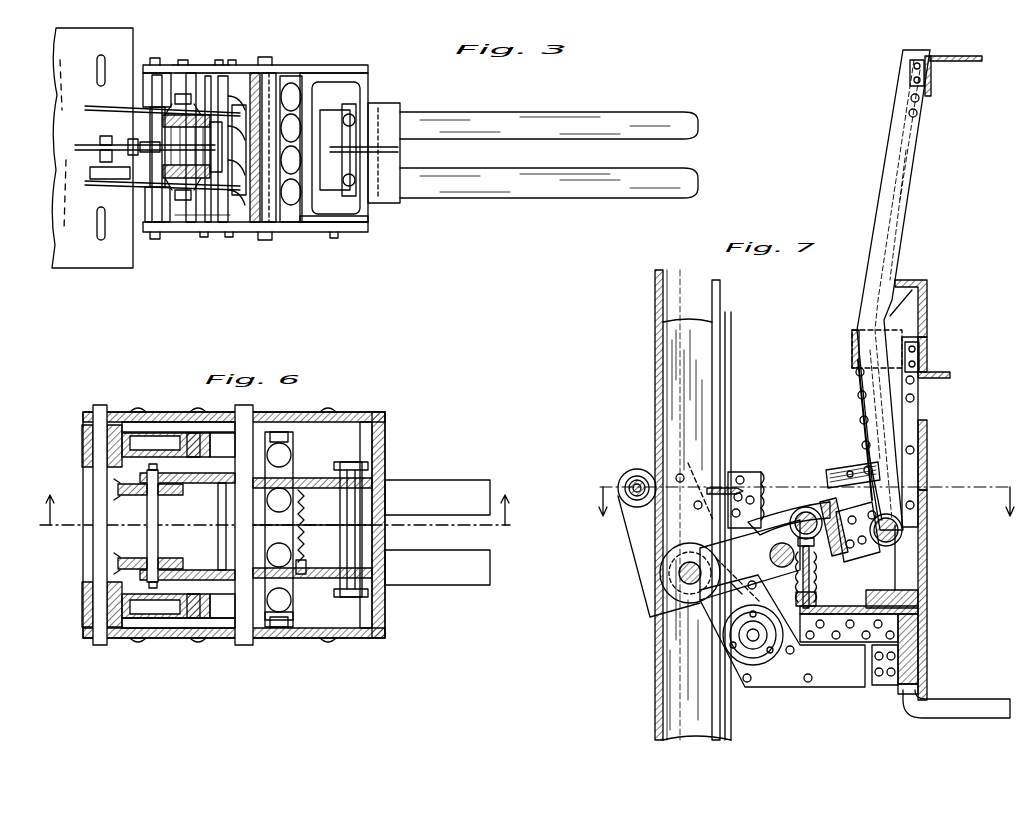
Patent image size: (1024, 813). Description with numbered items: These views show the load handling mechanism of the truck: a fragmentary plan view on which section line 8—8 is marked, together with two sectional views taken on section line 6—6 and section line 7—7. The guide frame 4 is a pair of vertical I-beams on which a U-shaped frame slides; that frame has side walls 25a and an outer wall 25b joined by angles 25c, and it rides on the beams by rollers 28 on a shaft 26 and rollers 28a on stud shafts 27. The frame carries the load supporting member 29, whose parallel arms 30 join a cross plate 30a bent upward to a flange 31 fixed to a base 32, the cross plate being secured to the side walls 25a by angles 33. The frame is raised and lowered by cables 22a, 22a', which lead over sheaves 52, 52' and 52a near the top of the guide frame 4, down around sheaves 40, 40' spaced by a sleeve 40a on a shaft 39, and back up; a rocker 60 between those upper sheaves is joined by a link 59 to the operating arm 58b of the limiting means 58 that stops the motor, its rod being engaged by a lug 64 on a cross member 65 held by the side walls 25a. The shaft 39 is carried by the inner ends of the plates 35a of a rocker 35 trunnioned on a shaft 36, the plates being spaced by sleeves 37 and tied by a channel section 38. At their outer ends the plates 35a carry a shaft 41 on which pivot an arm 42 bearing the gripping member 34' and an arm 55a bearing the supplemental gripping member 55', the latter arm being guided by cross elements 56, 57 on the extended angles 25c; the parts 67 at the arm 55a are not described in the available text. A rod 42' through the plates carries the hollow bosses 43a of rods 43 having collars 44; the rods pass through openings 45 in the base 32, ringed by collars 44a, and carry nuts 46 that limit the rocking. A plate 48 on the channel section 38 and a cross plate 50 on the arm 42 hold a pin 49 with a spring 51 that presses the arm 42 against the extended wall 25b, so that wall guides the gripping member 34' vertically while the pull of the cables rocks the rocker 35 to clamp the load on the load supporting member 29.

In FIG. 3, the guide frame 4 is at (222, 76).
In FIG. 6, the guide frame 4 is at (178, 525).
In FIG. 7, the guide frame 4 is at (732, 326).
In FIG. 7, the section line 6 is at (802, 501).
In FIG. 6, the section line 7 is at (275, 515).
In FIG. 3, the section line 8 is at (58, 248).
In FIG. 3, the flexible member 22a is at (155, 150).
In FIG. 7, the flexible member 22a' is at (686, 505).
In FIG. 3, the side walls 25a is at (316, 84).
In FIG. 6, the side walls 25a is at (308, 414).
In FIG. 7, the side walls 25a is at (826, 474).
In FIG. 3, the outer wall 25b is at (368, 218).
In FIG. 6, the outer wall 25b is at (386, 455).
In FIG. 7, the outer wall 25b is at (928, 455).
In FIG. 6, the angles 25c is at (386, 418).
In FIG. 7, the angles 25c is at (908, 560).
In FIG. 3, the shaft 26 is at (156, 232).
In FIG. 6, the shaft 26 is at (93, 562).
In FIG. 7, the shaft 26 is at (634, 480).
In FIG. 7, the stud shafts 27 is at (730, 642).
In FIG. 3, the rollers 28 is at (143, 84).
In FIG. 6, the rollers 28 is at (82, 450).
In FIG. 7, the rollers 28 is at (640, 469).
In FIG. 6, the rollers 28a is at (218, 422).
In FIG. 7, the rollers 28a is at (740, 660).
In FIG. 3, the load supporting member 29 is at (436, 139).
In FIG. 7, the load supporting member 29 is at (922, 677).
In FIG. 3, the arms 30 is at (514, 172).
In FIG. 6, the arms 30 is at (446, 480).
In FIG. 7, the arms 30 is at (955, 705).
In FIG. 7, the cross plate 30a is at (918, 645).
In FIG. 7, the flange 31 is at (918, 596).
In FIG. 7, the base 32 is at (918, 612).
In FIG. 7, the angles 33 is at (880, 686).
In FIG. 7, the gripping member 34' is at (948, 366).
In FIG. 6, the rocker 35 is at (208, 483).
In FIG. 7, the rocker 35 is at (786, 514).
In FIG. 7, the plates 35a is at (694, 498).
In FIG. 3, the shaft 36 is at (256, 73).
In FIG. 6, the shaft 36 is at (246, 645).
In FIG. 7, the shaft 36 is at (800, 582).
In FIG. 3, the sleeves 37 is at (270, 73).
In FIG. 6, the sleeves 37 is at (224, 520).
In FIG. 7, the sleeves 37 is at (770, 555).
In FIG. 6, the channel section 38 is at (310, 553).
In FIG. 7, the channel section 38 is at (856, 562).
In FIG. 6, the shaft 39 is at (158, 541).
In FIG. 7, the shaft 39 is at (664, 588).
In FIG. 6, the sheave 40 is at (155, 526).
In FIG. 7, the sleeve 40a is at (660, 576).
In FIG. 6, the sheave 40' is at (173, 526).
In FIG. 7, the sheave 40' is at (658, 595).
In FIG. 6, the shaft 41 is at (372, 526).
In FIG. 7, the shaft 41 is at (900, 524).
In FIG. 3, the arm 42 is at (364, 152).
In FIG. 6, the arm 42 is at (334, 524).
In FIG. 7, the arm 42 is at (929, 432).
In FIG. 6, the rod 42' is at (290, 623).
In FIG. 7, the rod 42' is at (800, 497).
In FIG. 7, the rods 43 is at (820, 588).
In FIG. 3, the hollow bosses 43a is at (298, 222).
In FIG. 6, the hollow bosses 43a is at (292, 455).
In FIG. 7, the hollow bosses 43a is at (808, 506).
In FIG. 7, the collars 44 is at (750, 560).
In FIG. 7, the collar 44a is at (762, 666).
In FIG. 7, the openings 45 is at (854, 642).
In FIG. 7, the nuts 46 is at (796, 650).
In FIG. 6, the plate 48 is at (310, 526).
In FIG. 7, the plate 48 is at (835, 522).
In FIG. 7, the pin 49 is at (853, 455).
In FIG. 7, the cross plate 50 is at (872, 470).
In FIG. 7, the spring 51 is at (857, 452).
In FIG. 3, the sheave 52 is at (161, 174).
In FIG. 3, the sheave 52' is at (180, 130).
In FIG. 3, the sheave 52a is at (210, 147).
In FIG. 3, the arm 55a is at (356, 108).
In FIG. 6, the arm 55a is at (348, 462).
In FIG. 7, the arm 55a is at (908, 158).
In FIG. 3, the gripping member 55' is at (391, 141).
In FIG. 7, the gripping member 55' is at (953, 63).
In FIG. 3, the cross element 56 is at (345, 84).
In FIG. 7, the cross element 56 is at (852, 350).
In FIG. 7, the cross element 57 is at (928, 284).
In FIG. 3, the limiting means 58 is at (92, 172).
In FIG. 3, the operating arm 58b is at (104, 145).
In FIG. 3, the link 59 is at (130, 140).
In FIG. 3, the rocker 60 is at (145, 142).
In FIG. 7, the lug 64 is at (730, 486).
In FIG. 7, the cross member 65 is at (760, 472).
In FIG. 7, the roller 67 is at (910, 72).